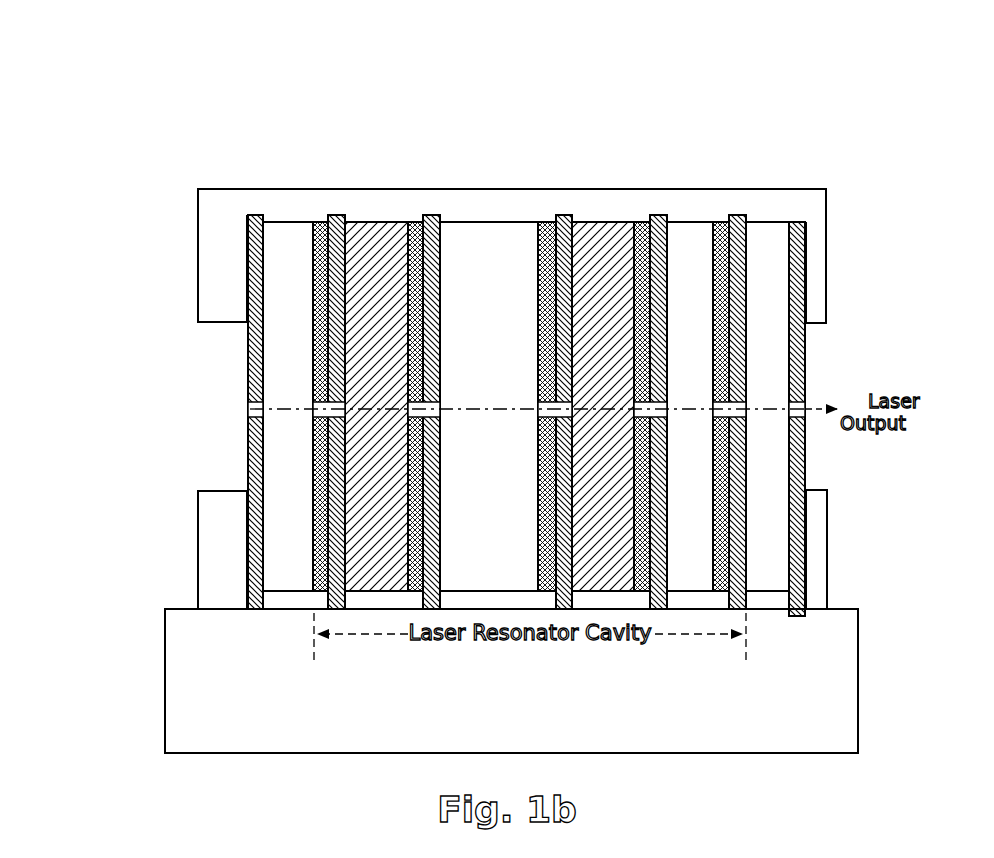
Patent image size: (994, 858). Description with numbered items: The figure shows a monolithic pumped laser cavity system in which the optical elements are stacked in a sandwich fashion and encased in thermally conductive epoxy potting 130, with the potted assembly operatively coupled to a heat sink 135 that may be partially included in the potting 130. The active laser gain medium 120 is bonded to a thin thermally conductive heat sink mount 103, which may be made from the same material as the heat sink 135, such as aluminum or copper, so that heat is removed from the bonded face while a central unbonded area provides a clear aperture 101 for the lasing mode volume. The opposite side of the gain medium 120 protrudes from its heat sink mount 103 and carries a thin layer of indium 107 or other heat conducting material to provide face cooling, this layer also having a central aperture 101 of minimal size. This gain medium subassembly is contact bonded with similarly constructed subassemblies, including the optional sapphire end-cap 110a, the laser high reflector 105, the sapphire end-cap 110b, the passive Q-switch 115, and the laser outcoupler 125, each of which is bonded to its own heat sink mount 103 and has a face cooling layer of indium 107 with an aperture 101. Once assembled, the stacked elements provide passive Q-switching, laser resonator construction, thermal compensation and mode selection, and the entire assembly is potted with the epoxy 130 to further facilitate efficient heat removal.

The aperture 101 is at (246, 410).
The heat sink mount 103 is at (773, 135).
The laser high reflector 105 is at (286, 219).
The indium 107 is at (812, 173).
The sapphire end-cap 110a is at (378, 218).
The sapphire end-cap 110b is at (601, 218).
The passive Q-switch 115 is at (688, 218).
The gain medium 120 is at (489, 406).
The laser outcoupler 125 is at (769, 218).
The thermally conductive epoxy potting 130 is at (196, 575).
The heat sink 135 is at (511, 681).